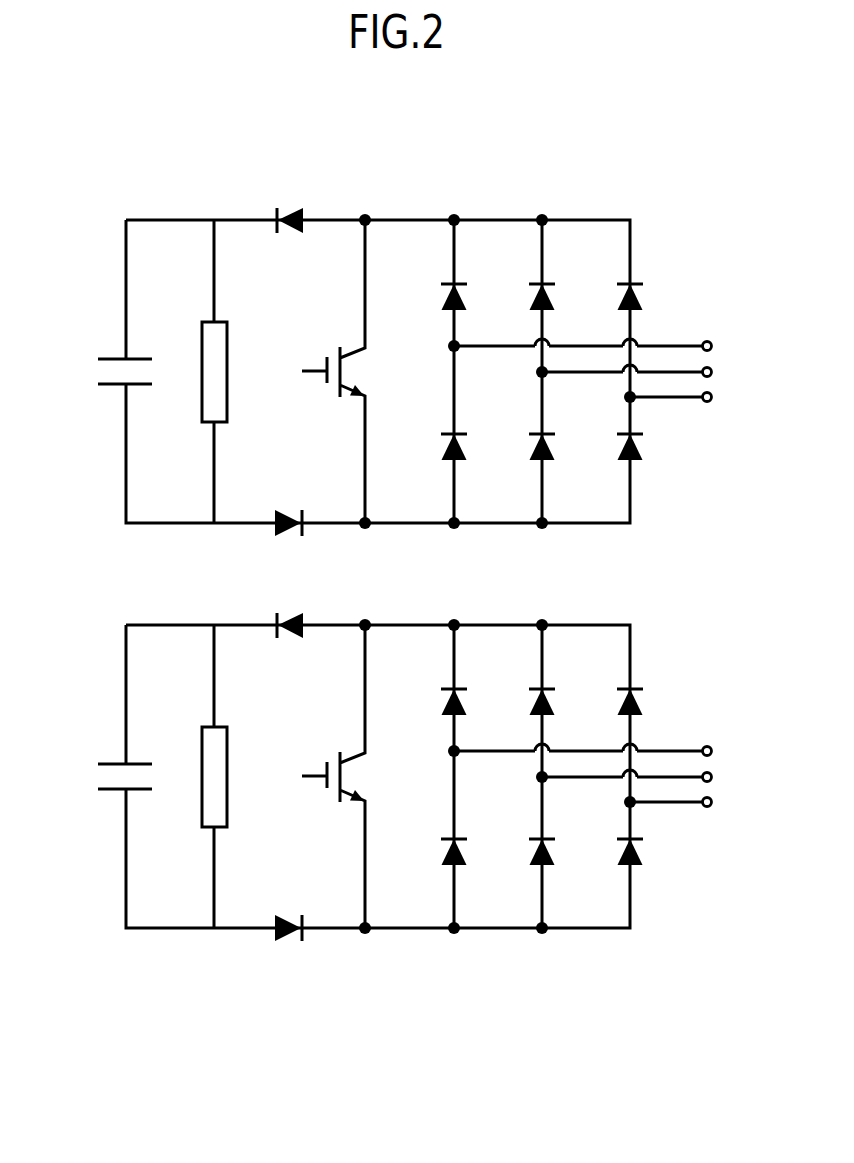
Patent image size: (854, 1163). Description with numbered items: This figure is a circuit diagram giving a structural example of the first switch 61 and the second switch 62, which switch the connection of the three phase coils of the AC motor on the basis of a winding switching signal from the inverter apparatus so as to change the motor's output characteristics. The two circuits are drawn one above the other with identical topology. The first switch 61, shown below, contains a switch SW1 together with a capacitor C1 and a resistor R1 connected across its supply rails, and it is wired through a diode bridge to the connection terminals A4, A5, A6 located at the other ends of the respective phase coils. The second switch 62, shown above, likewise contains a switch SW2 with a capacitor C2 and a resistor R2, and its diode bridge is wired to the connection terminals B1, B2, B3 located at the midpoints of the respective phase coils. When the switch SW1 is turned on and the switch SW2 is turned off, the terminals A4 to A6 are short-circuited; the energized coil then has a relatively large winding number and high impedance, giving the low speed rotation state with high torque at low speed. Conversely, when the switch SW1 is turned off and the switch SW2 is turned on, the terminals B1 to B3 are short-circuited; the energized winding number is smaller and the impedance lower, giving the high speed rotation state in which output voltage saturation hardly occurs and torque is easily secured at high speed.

The second switch 62 is at (397, 344).
The first switch 61 is at (397, 749).
The switch SW2 is at (323, 371).
The switch SW1 is at (323, 776).
The second capacitor C2 is at (136, 389).
The first capacitor C1 is at (136, 794).
The second resistor R2 is at (233, 372).
The first resistor R1 is at (233, 777).
The connection terminal B3 is at (598, 346).
The connection terminal B2 is at (642, 372).
The connection terminal B1 is at (686, 397).
The connection terminal A6 is at (598, 751).
The connection terminal A5 is at (642, 777).
The connection terminal A4 is at (686, 802).